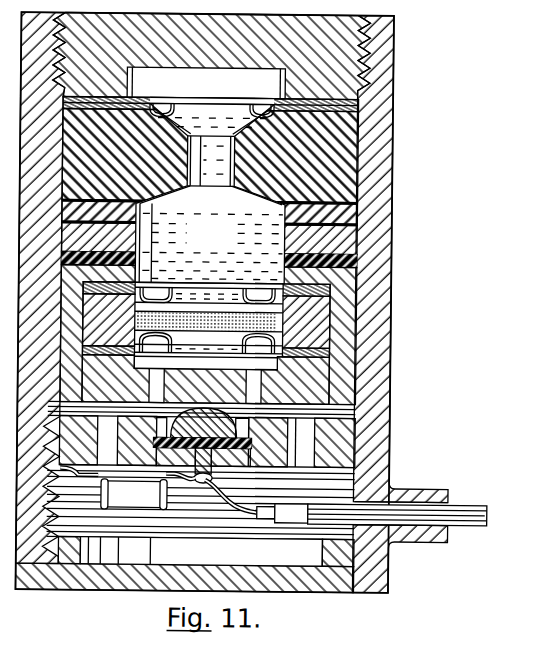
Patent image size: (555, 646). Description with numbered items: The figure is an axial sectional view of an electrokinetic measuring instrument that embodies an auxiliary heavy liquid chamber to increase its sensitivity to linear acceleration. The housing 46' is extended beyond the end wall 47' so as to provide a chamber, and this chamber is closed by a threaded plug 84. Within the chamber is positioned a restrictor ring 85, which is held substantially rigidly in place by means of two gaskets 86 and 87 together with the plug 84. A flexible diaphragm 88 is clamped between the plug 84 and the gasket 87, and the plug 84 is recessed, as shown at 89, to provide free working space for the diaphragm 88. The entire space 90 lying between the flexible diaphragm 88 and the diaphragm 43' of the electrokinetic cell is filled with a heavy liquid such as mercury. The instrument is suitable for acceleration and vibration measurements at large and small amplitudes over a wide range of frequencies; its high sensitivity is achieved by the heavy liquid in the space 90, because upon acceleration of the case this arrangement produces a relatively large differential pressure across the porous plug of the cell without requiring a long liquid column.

The threaded plug 84 is at (334, 56).
The gasket 87 is at (343, 104).
The restrictor ring 85 is at (338, 172).
The gasket 86 is at (346, 221).
The end wall 47' is at (262, 240).
The diaphragm of the electrokinetic cell 43' is at (262, 272).
The housing 46' is at (262, 334).
The flexible diaphragm 88 is at (198, 97).
The recess 89 is at (275, 71).
The space 90 is at (222, 250).